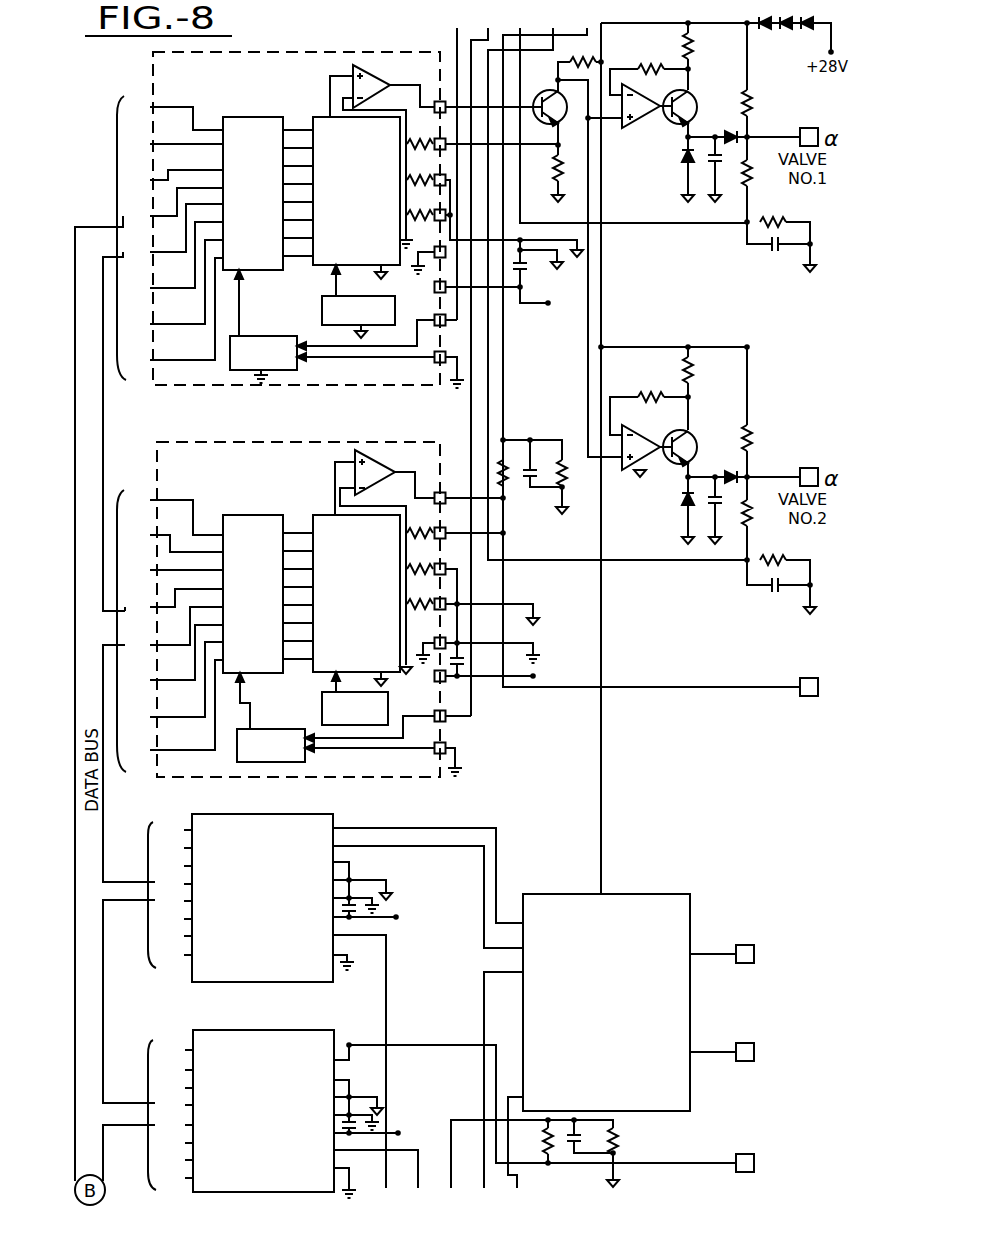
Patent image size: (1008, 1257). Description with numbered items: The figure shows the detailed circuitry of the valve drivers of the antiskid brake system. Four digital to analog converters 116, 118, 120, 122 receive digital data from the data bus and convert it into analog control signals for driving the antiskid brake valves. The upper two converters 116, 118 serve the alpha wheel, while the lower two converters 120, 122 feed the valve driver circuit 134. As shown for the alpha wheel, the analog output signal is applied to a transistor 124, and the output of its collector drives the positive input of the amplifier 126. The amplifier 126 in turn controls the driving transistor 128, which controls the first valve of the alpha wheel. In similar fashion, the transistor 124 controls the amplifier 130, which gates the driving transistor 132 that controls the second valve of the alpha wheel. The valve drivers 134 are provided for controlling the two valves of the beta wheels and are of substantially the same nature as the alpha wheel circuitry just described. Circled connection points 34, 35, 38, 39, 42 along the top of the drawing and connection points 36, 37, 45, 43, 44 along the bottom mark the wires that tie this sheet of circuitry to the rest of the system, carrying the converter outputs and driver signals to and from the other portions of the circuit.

The digital to analog converter 116 is at (315, 64).
The digital to analog converter 118 is at (322, 454).
The digital to analog converter 120 is at (332, 818).
The digital to analog converter 122 is at (308, 1030).
The transistor 124 is at (546, 93).
The amplifier 126 is at (627, 128).
The driving transistor 128 is at (696, 82).
The amplifier 130 is at (628, 466).
The driving transistor 132 is at (692, 432).
The valve drivers 134 is at (654, 893).
The connector pin line 34 is at (457, 160).
The connector pin line 35 is at (487, 358).
The connector pin line 38 is at (626, 111).
The connector pin line 39 is at (617, 280).
The connector pin line 42 is at (675, 363).
The connector pin line 36 is at (386, 1201).
The connector pin line 37 is at (418, 1201).
The connector pin line 45 is at (527, 1167).
The connector pin line 43 is at (496, 1095).
The connector pin line 44 is at (517, 1157).